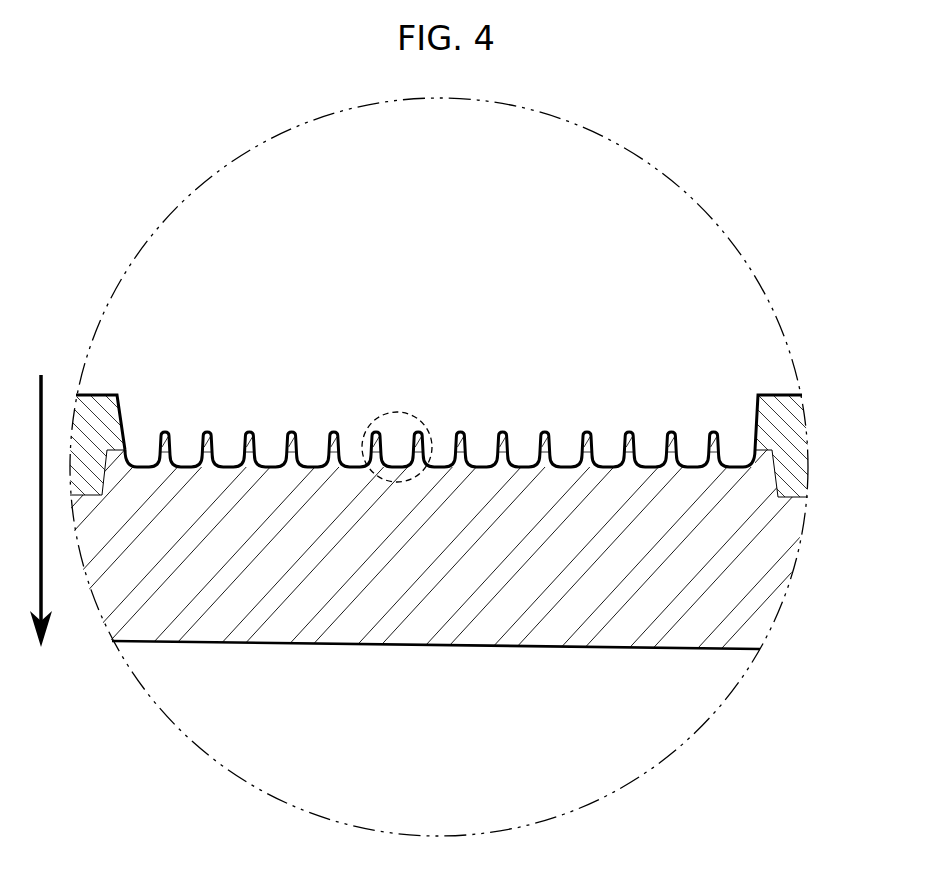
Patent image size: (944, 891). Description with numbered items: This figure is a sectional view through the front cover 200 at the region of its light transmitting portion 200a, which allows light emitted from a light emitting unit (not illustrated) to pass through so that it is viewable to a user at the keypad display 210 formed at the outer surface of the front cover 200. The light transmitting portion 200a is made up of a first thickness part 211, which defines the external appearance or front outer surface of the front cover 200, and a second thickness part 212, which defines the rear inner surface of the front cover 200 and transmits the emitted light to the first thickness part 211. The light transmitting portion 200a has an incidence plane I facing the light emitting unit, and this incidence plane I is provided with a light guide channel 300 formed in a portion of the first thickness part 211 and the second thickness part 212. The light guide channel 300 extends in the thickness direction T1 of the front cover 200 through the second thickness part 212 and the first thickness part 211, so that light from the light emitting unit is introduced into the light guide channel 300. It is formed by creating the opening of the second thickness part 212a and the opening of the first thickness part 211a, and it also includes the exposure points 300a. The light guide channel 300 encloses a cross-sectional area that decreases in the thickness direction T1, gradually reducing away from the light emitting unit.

The front cover 200 is at (472, 595).
The light transmitting portion 200a is at (633, 492).
The keypad display 210 is at (715, 652).
The first thickness part 211 is at (781, 556).
The opening of the first thickness part 211a is at (194, 460).
The second thickness part 212 is at (793, 440).
The opening of the second thickness part 212a is at (268, 445).
The light guide channel 300 is at (477, 461).
The exposure points 300a is at (440, 467).
The incidence plane I is at (562, 465).
The thickness direction T1 is at (28, 511).